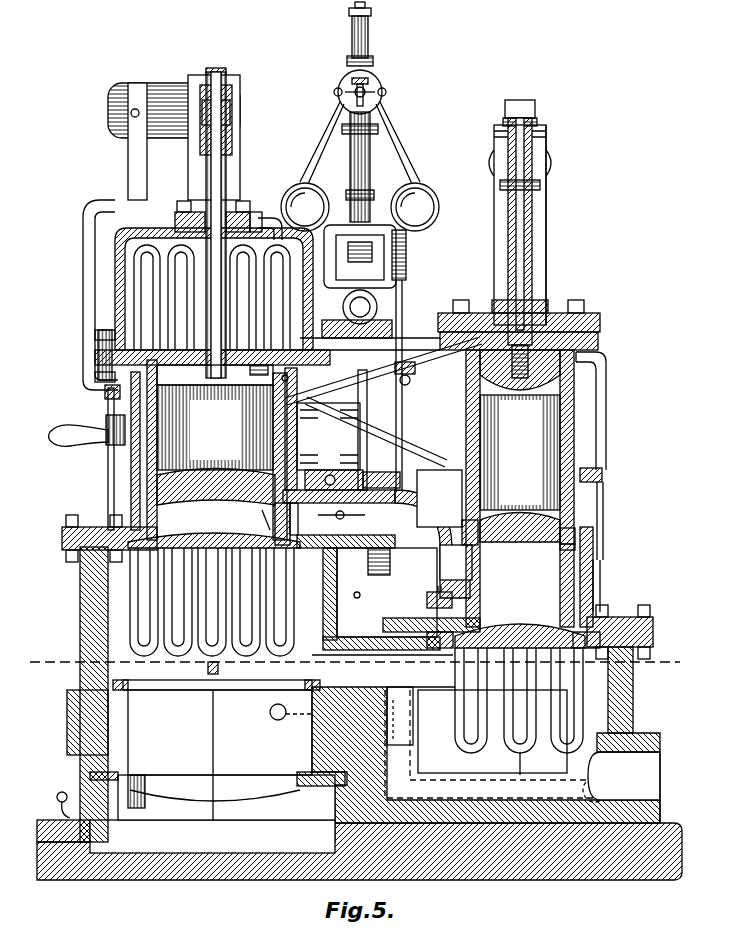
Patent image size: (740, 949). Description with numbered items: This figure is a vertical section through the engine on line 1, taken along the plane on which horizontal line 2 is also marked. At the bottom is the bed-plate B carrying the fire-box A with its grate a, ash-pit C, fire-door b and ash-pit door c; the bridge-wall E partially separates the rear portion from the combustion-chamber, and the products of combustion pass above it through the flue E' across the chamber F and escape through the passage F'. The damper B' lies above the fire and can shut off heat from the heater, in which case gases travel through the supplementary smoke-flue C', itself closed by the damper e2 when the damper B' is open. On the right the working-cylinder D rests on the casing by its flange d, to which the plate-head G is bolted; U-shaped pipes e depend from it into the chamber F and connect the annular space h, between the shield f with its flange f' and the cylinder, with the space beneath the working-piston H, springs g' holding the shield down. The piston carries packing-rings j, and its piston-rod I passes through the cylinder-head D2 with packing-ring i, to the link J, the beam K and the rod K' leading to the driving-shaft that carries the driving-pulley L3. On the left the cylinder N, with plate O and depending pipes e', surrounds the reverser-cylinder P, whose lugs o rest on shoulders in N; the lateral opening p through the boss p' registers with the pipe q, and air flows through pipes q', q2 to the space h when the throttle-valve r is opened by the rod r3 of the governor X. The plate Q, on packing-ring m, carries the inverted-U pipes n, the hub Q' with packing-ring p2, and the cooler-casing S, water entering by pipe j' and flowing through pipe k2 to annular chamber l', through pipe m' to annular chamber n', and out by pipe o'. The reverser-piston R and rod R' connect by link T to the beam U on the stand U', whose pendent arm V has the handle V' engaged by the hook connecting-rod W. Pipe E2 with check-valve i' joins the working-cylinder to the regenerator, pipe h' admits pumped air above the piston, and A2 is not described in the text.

The bed-plate B is at (359, 860).
The bridge-wall E is at (486, 755).
The ash-pit C is at (212, 836).
The grate a is at (217, 796).
The damper B' is at (216, 750).
The supplementary smoke-flue C' is at (450, 746).
The flue E' is at (383, 672).
The damper e2 is at (402, 716).
The chamber F is at (492, 731).
The passage F' is at (624, 776).
The fire-box A is at (636, 704).
The fire-door b is at (80, 722).
The ash-pit door c is at (59, 807).
The section line 1 is at (109, 538).
The cylinder N is at (124, 451).
The hook connecting-rod W is at (106, 424).
The handle V' is at (73, 428).
The annular chamber l' is at (101, 390).
The plate Q is at (194, 356).
The pipe k2 is at (92, 295).
The cooler-casing S is at (212, 289).
The pipes n is at (212, 297).
The beam U is at (174, 97).
The pendent arm V is at (137, 141).
The stand U' is at (204, 137).
The link T is at (215, 118).
The piston-rod R' is at (235, 225).
The tubular hub Q' is at (205, 215).
The cupped leather packing-ring p2 is at (254, 222).
The pipe j' is at (270, 215).
The governor X is at (360, 246).
The beam K is at (512, 109).
The link J is at (522, 168).
The piston-rod I is at (512, 250).
The rod K' is at (557, 225).
The cylinder-head D2 is at (487, 312).
The cupped packing-ring i is at (518, 297).
The pipe E2 is at (433, 357).
The check-valve i' is at (413, 378).
The pipe m' is at (376, 432).
The reverser-cylinder P is at (160, 379).
The rubber packing-ring m is at (259, 370).
The lugs o is at (283, 385).
The reverser-piston R is at (216, 445).
The plate O is at (284, 581).
The lateral opening p is at (263, 520).
The boss p' is at (291, 519).
The U-shaped pipes e' is at (212, 611).
The driving-pulley L3 is at (328, 436).
The rod r3 is at (371, 430).
The bracket A2 is at (352, 480).
The pipe q is at (339, 508).
The throttle-valve r is at (341, 510).
The pipe q' is at (432, 544).
The pipe q2 is at (456, 562).
The annular chamber n' is at (521, 484).
The coiled metal springs g' is at (533, 525).
The flange f' is at (590, 545).
The annular space h is at (510, 577).
The flange d is at (518, 629).
The shield f is at (520, 488).
The working-piston H is at (520, 443).
The plate-head G is at (520, 632).
The U-shaped pipes e is at (519, 711).
The working-cylinder D is at (606, 432).
The cupped leather packing-rings j is at (593, 362).
The pipe o' is at (616, 521).
The pipe h' is at (611, 586).
The section line 2 is at (356, 663).